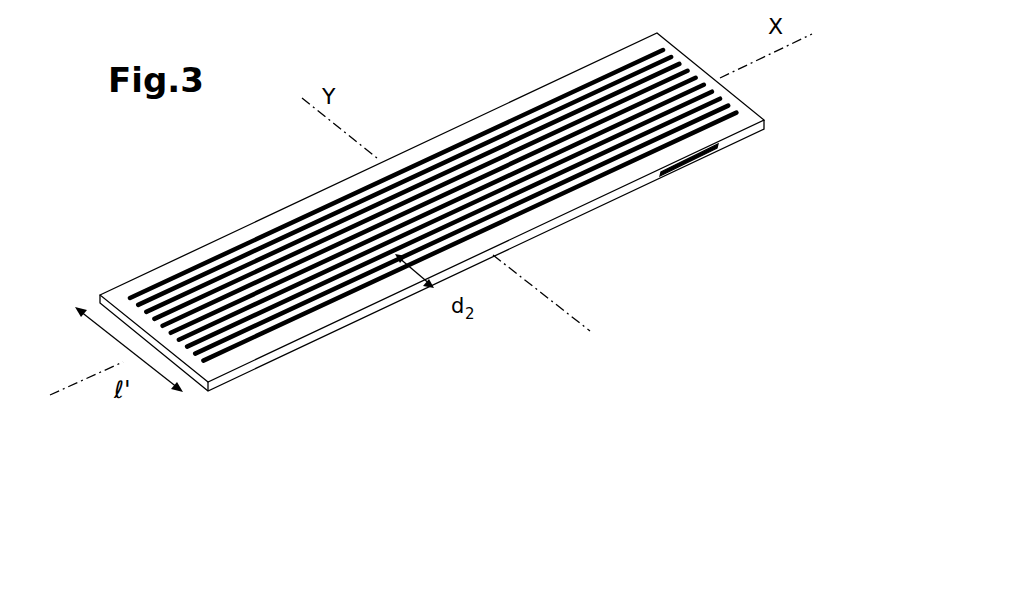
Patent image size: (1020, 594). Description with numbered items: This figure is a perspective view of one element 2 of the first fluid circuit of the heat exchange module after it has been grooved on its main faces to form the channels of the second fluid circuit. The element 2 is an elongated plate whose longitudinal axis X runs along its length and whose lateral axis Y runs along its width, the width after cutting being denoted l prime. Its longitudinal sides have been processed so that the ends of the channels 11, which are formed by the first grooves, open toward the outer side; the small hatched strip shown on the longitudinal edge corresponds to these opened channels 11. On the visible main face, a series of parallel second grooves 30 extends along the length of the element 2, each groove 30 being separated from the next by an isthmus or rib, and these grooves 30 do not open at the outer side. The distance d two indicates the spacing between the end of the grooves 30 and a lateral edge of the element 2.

The element of the first fluid circuit 2 is at (247, 348).
The second grooves 30 is at (247, 262).
The channels 11 is at (701, 160).